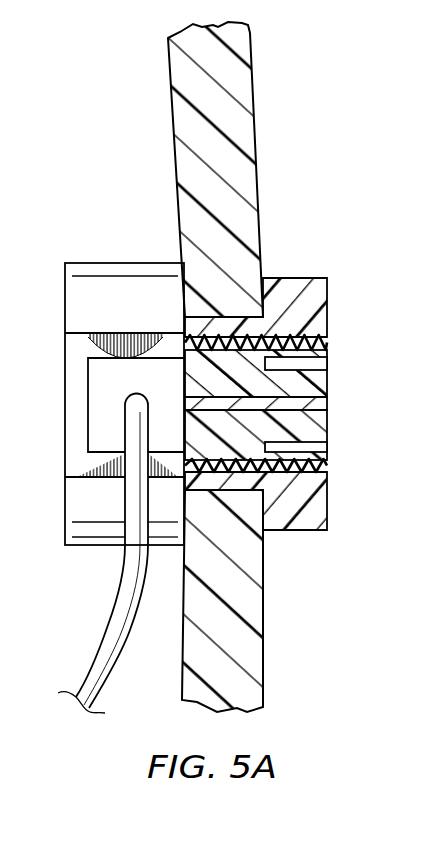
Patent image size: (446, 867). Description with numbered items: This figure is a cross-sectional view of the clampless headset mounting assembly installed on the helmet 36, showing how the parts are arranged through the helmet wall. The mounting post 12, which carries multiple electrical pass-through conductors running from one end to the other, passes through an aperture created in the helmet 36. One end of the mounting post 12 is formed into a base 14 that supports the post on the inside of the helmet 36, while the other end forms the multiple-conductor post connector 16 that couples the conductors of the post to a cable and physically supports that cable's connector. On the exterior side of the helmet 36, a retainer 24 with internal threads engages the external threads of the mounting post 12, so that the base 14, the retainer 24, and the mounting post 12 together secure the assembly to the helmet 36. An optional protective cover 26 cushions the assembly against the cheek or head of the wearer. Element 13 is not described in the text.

The helmet 36 is at (261, 136).
The retainer 24 is at (296, 278).
The mounting post 12 is at (323, 338).
The multiple-conductor post connector 16 is at (346, 449).
The second mounting block 13 is at (237, 490).
The protective cover 26 is at (108, 263).
The base 14 is at (80, 384).